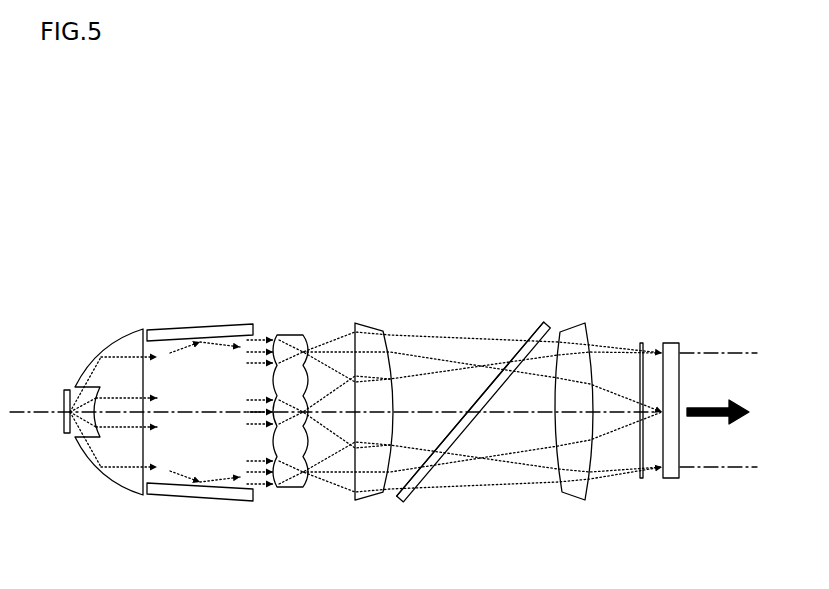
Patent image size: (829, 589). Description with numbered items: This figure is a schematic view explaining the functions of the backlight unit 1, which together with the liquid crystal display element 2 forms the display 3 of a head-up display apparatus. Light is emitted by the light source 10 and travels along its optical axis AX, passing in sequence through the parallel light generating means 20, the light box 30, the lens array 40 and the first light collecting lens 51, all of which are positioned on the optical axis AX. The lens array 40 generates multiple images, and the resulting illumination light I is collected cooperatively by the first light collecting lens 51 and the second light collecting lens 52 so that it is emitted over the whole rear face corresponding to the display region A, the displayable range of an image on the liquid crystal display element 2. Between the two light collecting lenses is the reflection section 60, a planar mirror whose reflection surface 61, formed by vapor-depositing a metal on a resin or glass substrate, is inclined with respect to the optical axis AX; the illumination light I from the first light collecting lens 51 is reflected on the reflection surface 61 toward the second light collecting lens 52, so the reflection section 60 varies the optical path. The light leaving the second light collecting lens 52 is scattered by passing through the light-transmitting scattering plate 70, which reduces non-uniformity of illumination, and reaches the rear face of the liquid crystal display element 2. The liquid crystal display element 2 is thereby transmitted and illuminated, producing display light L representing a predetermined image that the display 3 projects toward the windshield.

The backlight unit 1 is at (402, 287).
The liquid crystal display element 2 is at (667, 338).
The display 3 is at (638, 183).
The light source 10 is at (67, 434).
The parallel light generating means 20 is at (120, 484).
The light box 30 is at (193, 490).
The lens array 40 is at (290, 488).
The first light collecting lens 51 is at (376, 500).
The second light collecting lens 52 is at (573, 493).
The reflection section 60 is at (548, 322).
The reflection surface 61 is at (522, 330).
The scattering plate 70 is at (640, 343).
The optical axis AX is at (18, 405).
The illumination light I is at (113, 412).
The display light L is at (718, 406).
The display region A is at (760, 350).